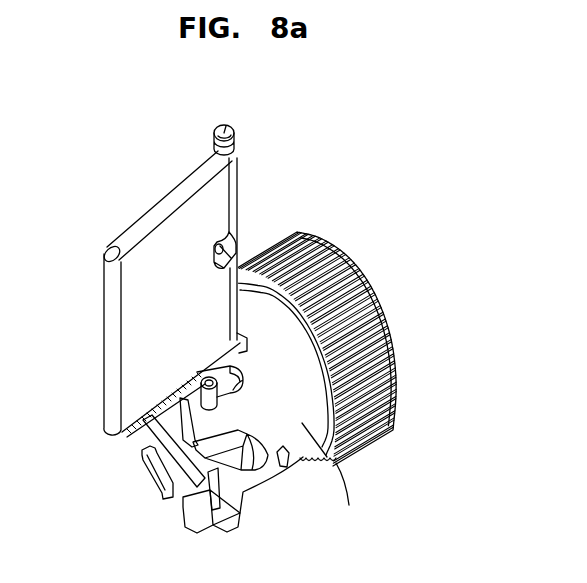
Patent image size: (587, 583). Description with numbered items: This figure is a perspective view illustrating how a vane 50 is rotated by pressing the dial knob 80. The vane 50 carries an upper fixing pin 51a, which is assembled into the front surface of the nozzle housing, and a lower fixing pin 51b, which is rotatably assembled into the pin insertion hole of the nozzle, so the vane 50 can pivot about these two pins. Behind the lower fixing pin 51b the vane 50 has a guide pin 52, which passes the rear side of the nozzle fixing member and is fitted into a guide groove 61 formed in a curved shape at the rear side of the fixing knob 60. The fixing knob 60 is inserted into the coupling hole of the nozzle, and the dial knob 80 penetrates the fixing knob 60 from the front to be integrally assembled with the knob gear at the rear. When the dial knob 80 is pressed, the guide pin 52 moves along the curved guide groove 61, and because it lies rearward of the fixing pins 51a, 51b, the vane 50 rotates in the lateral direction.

The vane 50 is at (177, 231).
The upper fixing pin 51a is at (230, 128).
The lower fixing pin 51b is at (243, 278).
The guide pin 52 is at (190, 392).
The fixing knob 60 is at (328, 458).
The guide groove 61 is at (222, 362).
The dial knob 80 is at (375, 306).